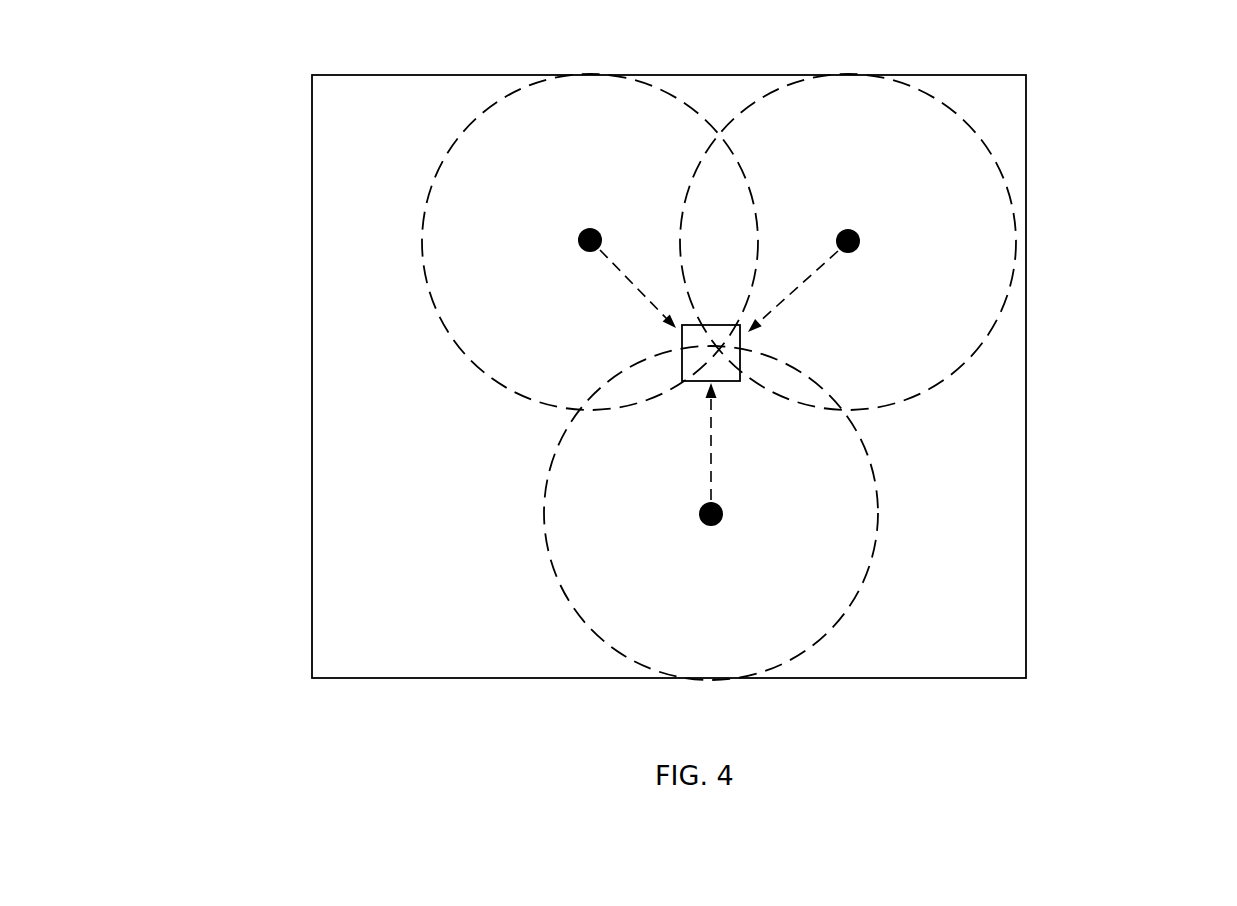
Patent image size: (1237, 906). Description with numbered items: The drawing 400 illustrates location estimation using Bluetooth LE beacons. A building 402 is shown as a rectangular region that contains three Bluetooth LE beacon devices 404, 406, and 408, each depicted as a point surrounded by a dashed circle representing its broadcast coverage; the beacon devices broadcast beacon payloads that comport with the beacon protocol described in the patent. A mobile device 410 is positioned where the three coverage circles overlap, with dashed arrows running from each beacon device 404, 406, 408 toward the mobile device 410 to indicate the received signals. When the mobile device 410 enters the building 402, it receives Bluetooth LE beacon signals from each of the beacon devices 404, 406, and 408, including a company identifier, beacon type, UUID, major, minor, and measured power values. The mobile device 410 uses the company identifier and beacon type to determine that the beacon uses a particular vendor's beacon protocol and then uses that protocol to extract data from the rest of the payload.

The drawing 400 is at (1182, 120).
The building 402 is at (312, 231).
The Bluetooth LE beacon device 404 is at (582, 237).
The Bluetooth LE beacon device 406 is at (853, 234).
The Bluetooth LE beacon device 408 is at (717, 527).
The mobile device 410 is at (691, 364).